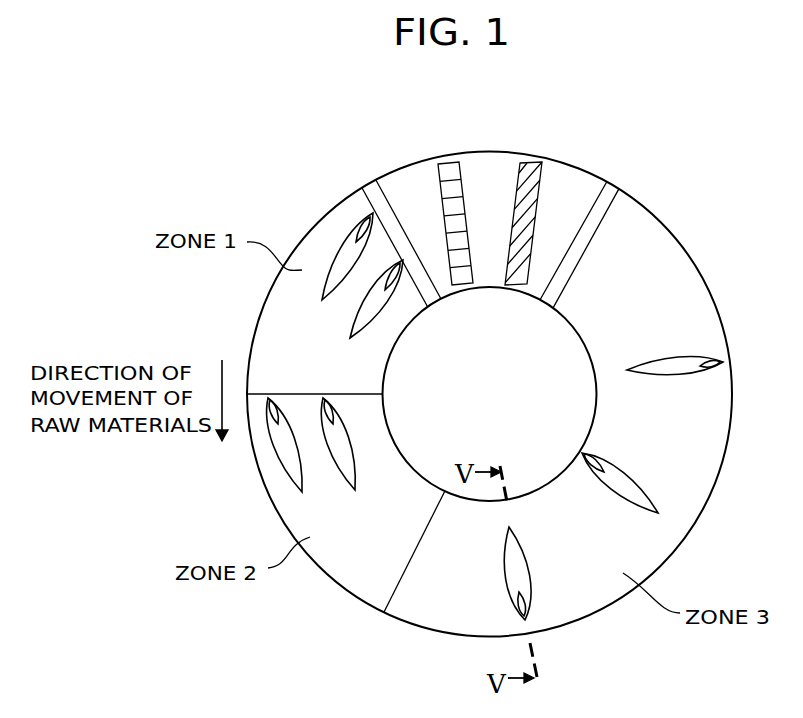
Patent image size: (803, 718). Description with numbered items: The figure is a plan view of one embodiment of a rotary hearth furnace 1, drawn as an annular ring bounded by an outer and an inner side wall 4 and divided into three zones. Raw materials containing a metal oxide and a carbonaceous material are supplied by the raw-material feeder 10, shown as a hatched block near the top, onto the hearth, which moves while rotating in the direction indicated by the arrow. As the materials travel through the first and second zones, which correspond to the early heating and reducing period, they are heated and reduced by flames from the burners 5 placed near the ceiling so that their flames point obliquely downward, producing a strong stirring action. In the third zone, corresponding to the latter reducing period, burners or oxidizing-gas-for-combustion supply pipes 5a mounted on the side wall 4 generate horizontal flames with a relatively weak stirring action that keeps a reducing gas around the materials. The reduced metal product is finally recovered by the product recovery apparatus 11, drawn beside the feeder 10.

The rotary hearth furnace 1 is at (367, 572).
The side wall 4 is at (693, 527).
The burner 5 is at (340, 278).
The burner or oxidizing-gas-for-combustion supply pipe 5a is at (613, 482).
The raw-material feeder 10 is at (447, 165).
The product recovery apparatus 11 is at (527, 165).